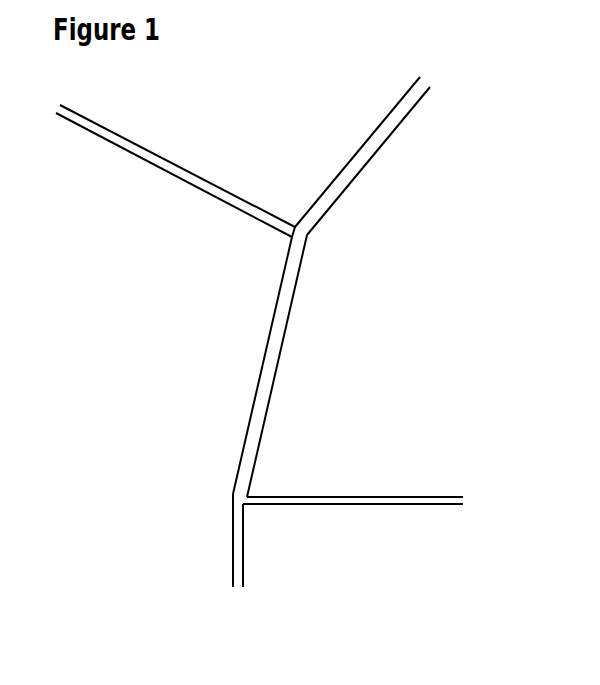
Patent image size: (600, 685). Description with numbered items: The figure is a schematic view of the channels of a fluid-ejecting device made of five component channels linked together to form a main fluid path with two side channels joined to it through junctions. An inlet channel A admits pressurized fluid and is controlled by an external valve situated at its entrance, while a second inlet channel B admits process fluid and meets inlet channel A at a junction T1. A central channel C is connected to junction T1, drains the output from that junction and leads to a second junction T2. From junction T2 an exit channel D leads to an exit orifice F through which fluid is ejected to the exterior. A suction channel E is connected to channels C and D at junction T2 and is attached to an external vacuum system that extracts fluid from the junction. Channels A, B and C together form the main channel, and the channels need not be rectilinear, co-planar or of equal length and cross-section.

The inlet channel A is at (362, 156).
The inlet channel B is at (175, 171).
The central channel C is at (272, 366).
The exit channel D is at (254, 540).
The suction channel E is at (353, 477).
The exit orifice F is at (225, 595).
The junction T1 is at (318, 242).
The junction T2 is at (227, 495).